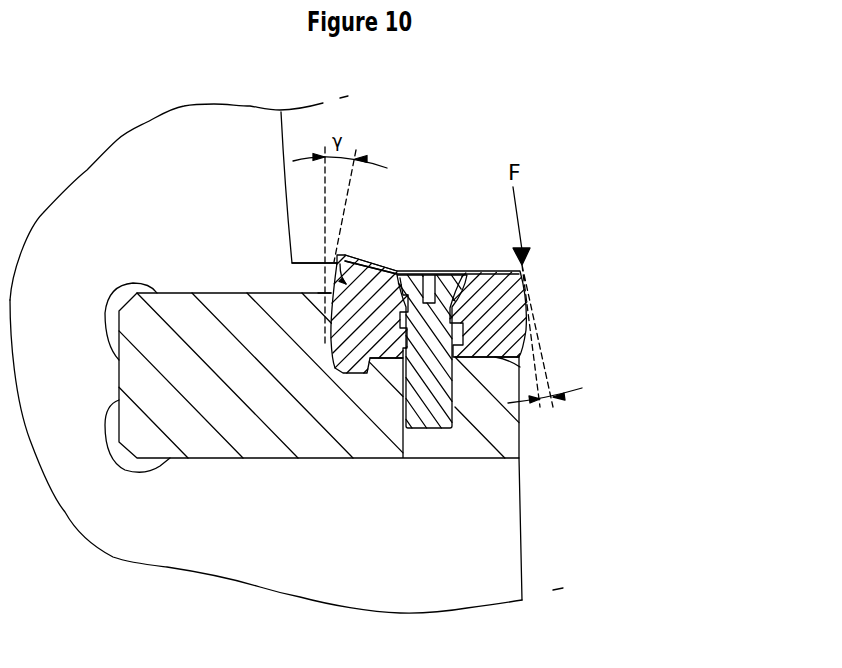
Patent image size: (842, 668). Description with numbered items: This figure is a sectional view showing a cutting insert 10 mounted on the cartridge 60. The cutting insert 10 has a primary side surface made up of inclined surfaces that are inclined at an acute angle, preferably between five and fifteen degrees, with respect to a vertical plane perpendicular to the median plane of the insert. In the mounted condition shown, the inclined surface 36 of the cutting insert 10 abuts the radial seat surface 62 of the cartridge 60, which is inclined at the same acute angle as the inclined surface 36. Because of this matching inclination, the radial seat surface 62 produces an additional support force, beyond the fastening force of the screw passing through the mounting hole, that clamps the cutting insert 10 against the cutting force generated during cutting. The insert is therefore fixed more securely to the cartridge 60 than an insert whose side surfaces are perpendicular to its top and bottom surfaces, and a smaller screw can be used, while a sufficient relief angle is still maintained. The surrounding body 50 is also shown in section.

The cutting insert 10 is at (540, 288).
The inclined surface 36 is at (388, 273).
The cutter body 50 is at (108, 198).
The cartridge 60 is at (494, 411).
The radial seat surface 62 is at (332, 292).